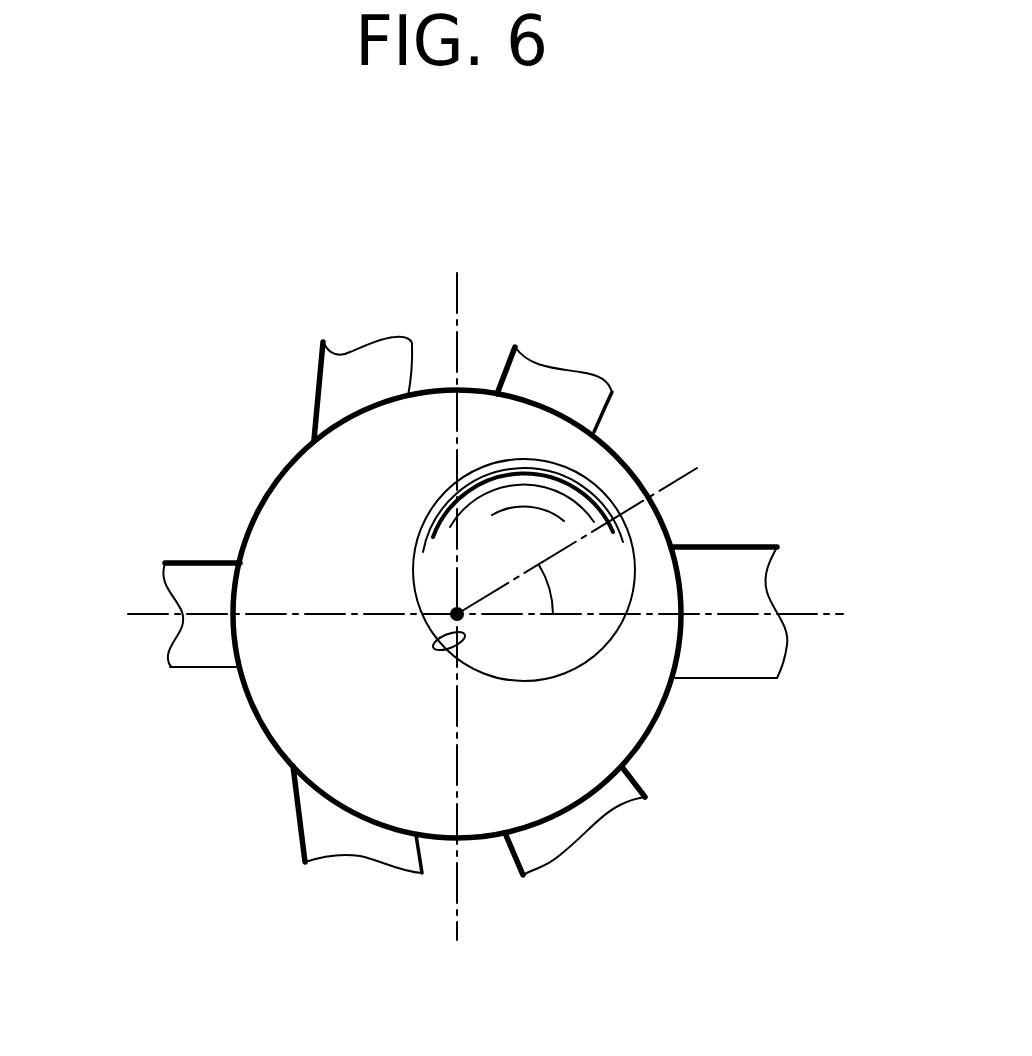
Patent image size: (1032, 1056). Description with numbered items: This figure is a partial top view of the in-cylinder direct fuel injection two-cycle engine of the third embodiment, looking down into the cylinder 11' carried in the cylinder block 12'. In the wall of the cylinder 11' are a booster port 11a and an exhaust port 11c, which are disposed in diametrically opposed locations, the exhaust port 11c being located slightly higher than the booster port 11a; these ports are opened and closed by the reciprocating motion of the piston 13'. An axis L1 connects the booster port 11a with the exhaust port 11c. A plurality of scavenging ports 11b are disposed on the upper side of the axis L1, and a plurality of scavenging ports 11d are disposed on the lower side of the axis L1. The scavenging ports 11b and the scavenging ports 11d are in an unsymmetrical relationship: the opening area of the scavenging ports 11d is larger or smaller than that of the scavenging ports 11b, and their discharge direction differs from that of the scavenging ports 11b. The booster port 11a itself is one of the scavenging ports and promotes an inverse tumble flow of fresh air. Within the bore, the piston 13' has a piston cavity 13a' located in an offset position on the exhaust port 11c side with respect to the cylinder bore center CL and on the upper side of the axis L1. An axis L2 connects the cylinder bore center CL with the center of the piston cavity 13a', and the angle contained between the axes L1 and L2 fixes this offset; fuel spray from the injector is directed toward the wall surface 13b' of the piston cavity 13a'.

The cylinder 11' is at (437, 566).
The booster port 11a is at (190, 577).
The scavenging ports 11b is at (545, 387).
The exhaust port 11c is at (735, 567).
The scavenging ports 11d is at (542, 857).
The cylinder block 12' is at (154, 758).
The piston 13' is at (451, 522).
The piston cavity 13a' is at (599, 640).
The wall surface 13b' is at (390, 696).
The axis L1 is at (520, 624).
The axis L2 is at (608, 520).
The cylinder bore center CL is at (493, 637).